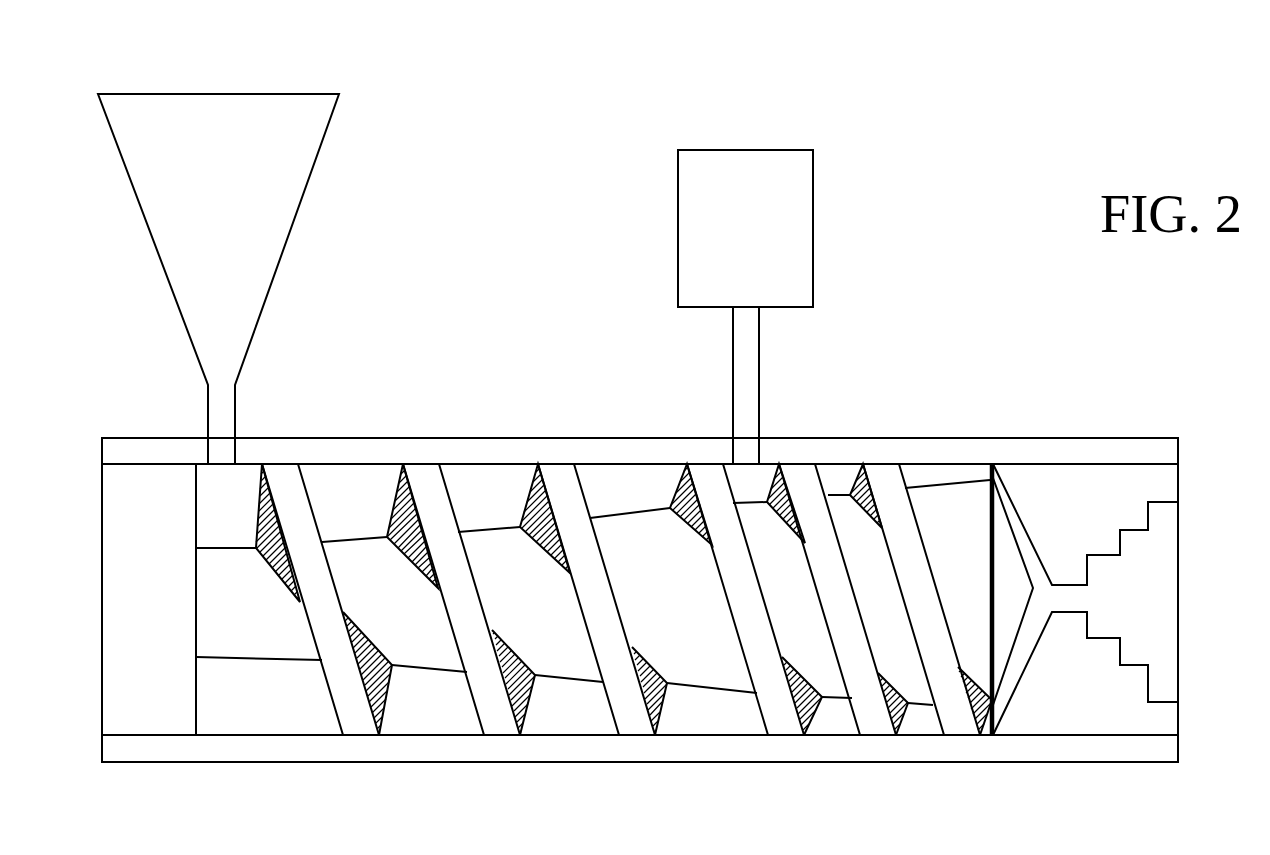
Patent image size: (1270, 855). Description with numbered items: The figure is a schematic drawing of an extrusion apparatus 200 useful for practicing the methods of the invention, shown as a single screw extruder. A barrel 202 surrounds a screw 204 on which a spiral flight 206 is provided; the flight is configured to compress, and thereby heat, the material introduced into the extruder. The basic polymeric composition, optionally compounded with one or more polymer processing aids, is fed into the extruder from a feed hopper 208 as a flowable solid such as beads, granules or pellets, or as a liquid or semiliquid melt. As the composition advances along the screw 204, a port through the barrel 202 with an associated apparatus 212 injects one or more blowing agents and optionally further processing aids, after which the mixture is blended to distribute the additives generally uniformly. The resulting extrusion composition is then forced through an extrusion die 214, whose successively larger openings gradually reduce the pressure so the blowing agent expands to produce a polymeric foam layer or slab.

The extrusion apparatus 200 is at (1101, 60).
The barrel 202 is at (268, 438).
The screw 204 is at (640, 548).
The spiral flight 206 is at (450, 507).
The feed hopper 208 is at (300, 153).
The apparatus for injecting blowing agents 212 is at (800, 278).
The extrusion die 214 is at (1097, 517).